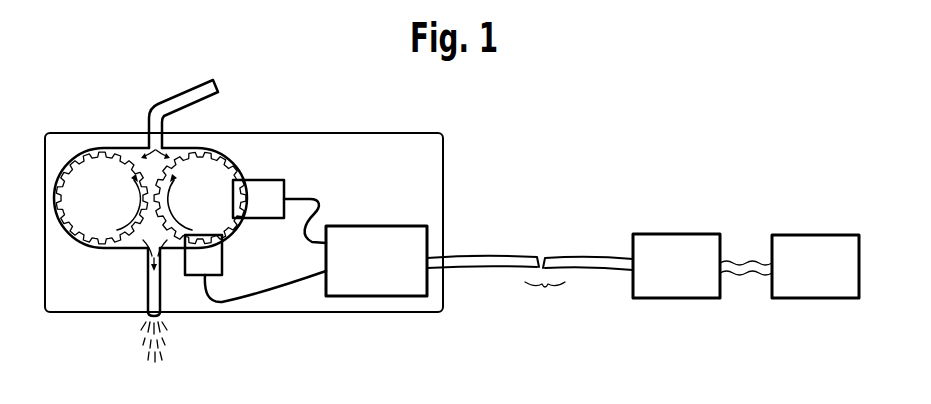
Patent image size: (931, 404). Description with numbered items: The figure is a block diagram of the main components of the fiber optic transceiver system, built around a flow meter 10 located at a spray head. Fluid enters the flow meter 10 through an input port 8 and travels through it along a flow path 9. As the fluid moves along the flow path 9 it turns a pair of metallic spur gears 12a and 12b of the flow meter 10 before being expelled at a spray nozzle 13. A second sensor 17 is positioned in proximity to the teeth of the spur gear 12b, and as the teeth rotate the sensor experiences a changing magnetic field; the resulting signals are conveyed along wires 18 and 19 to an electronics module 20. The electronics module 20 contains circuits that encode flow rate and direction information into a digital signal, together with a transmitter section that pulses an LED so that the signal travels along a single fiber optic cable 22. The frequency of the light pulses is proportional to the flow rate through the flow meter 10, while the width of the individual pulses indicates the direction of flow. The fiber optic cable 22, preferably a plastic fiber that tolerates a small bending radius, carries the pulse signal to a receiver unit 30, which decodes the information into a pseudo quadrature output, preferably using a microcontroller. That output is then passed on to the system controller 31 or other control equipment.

The input port 8 is at (167, 100).
The flow path 9 is at (200, 84).
The flow meter 10 is at (114, 47).
The metallic spur gear 12a is at (97, 180).
The metallic spur gear 12b is at (212, 165).
The spray nozzle 13 is at (168, 317).
The second sensor 17 is at (224, 263).
The wire 18 is at (298, 232).
The wire 19 is at (267, 287).
The electronics module 20 is at (380, 226).
The fiber optic cable 22 is at (505, 257).
The receiver unit 30 is at (678, 234).
The system controller 31 is at (782, 235).